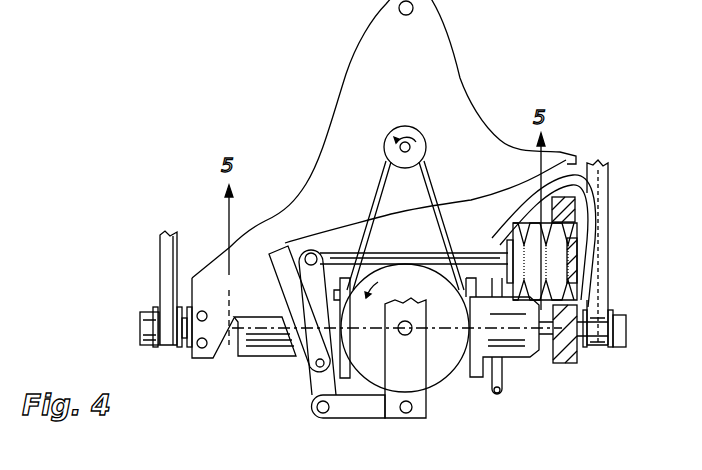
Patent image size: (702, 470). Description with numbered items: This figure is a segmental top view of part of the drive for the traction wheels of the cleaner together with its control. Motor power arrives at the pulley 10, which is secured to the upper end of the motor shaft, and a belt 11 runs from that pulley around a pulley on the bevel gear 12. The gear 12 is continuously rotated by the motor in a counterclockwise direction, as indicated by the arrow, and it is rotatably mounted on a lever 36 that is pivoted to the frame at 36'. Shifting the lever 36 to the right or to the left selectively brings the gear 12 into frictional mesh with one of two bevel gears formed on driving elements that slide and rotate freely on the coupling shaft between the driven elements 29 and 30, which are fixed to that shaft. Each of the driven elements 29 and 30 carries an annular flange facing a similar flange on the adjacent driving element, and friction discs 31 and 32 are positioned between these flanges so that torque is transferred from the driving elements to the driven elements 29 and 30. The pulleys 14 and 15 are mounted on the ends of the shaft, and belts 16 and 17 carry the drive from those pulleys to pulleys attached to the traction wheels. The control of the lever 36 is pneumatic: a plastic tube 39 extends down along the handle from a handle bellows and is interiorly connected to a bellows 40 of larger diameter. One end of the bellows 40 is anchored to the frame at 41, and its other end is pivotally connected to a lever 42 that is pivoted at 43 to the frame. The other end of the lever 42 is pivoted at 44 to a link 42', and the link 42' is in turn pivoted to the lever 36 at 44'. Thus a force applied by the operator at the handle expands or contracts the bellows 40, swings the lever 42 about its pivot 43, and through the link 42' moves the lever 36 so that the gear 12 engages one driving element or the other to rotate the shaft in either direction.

The pulley 10 is at (431, 131).
The belt 11 is at (433, 178).
The bevel gear 12 is at (405, 328).
The pulley 14 is at (163, 352).
The pulley 15 is at (602, 352).
The belt 16 is at (158, 268).
The belt 17 is at (610, 185).
The driven element 29 is at (268, 358).
The driven element 30 is at (511, 337).
The friction disc 31 is at (348, 378).
The friction disc 32 is at (478, 388).
The lever 36 is at (405, 358).
The pivot 36' is at (413, 25).
The plastic tube 39 is at (506, 212).
The bellows 40 is at (506, 242).
The anchor point 41 is at (580, 288).
The lever 42 is at (299, 293).
The link 42' is at (348, 421).
The pivot 43 is at (316, 366).
The pivot 44 is at (310, 424).
The pivot 44' is at (415, 424).